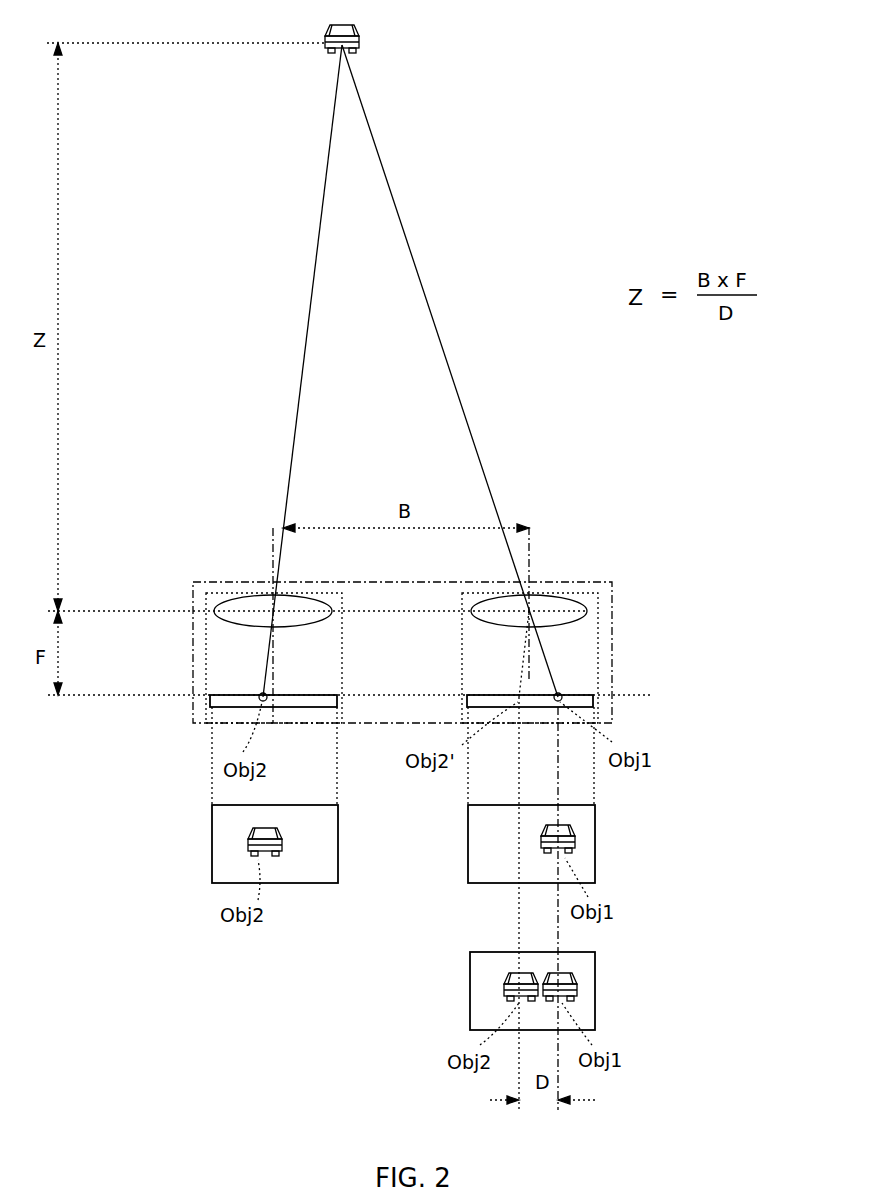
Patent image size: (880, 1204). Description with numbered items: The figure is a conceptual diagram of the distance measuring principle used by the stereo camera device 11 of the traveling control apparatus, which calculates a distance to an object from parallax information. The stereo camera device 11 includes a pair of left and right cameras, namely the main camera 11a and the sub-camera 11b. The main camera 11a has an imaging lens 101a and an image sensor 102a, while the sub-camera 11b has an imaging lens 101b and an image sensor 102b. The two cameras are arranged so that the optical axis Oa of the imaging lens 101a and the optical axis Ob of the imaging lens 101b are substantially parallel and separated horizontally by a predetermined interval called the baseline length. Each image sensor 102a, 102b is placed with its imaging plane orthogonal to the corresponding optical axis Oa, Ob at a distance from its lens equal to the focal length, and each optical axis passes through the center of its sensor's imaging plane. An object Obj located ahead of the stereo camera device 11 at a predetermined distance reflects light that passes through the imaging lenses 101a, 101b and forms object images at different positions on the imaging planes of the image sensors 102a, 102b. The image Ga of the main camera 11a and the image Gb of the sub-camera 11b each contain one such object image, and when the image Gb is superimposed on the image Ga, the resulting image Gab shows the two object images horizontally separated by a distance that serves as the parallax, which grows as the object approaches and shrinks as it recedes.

The stereo camera device 11 is at (575, 582).
The main camera 11a is at (612, 648).
The sub-camera 11b is at (193, 648).
The imaging lens 101a is at (588, 603).
The imaging lens 101b is at (235, 600).
The image sensor 102a is at (594, 705).
The image sensor 102b is at (215, 705).
The object Obj is at (357, 30).
The optical axis Ob is at (283, 520).
The optical axis Oa is at (529, 520).
The image Ga is at (596, 845).
The image Gb is at (338, 845).
The superimposed image Gab is at (597, 990).